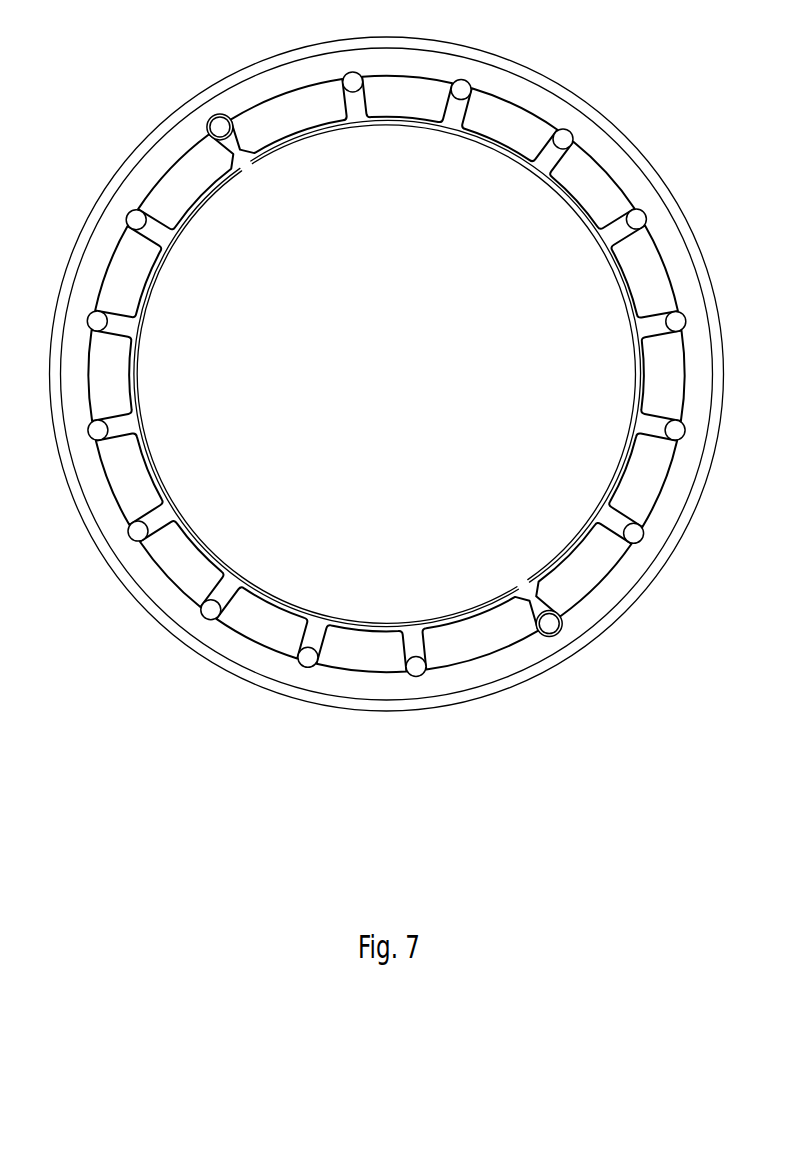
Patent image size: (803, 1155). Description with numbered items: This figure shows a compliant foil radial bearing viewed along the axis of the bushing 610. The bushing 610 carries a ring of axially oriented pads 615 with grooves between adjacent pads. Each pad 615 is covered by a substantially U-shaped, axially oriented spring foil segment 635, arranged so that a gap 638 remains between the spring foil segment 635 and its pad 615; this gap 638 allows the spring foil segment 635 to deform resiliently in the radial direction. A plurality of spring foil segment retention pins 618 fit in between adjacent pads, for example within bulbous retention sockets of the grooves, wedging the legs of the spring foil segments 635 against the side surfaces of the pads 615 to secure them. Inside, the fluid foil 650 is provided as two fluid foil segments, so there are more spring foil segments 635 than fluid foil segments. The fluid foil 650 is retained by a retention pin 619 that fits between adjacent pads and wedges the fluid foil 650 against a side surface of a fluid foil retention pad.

The bushing 610 is at (162, 108).
The pad 615 is at (643, 280).
The spring foil segment retention pin 618 is at (351, 82).
The retention pin 619 is at (550, 636).
The spring foil segment 635 is at (124, 320).
The gap 638 is at (495, 140).
The fluid foil 650 is at (257, 152).